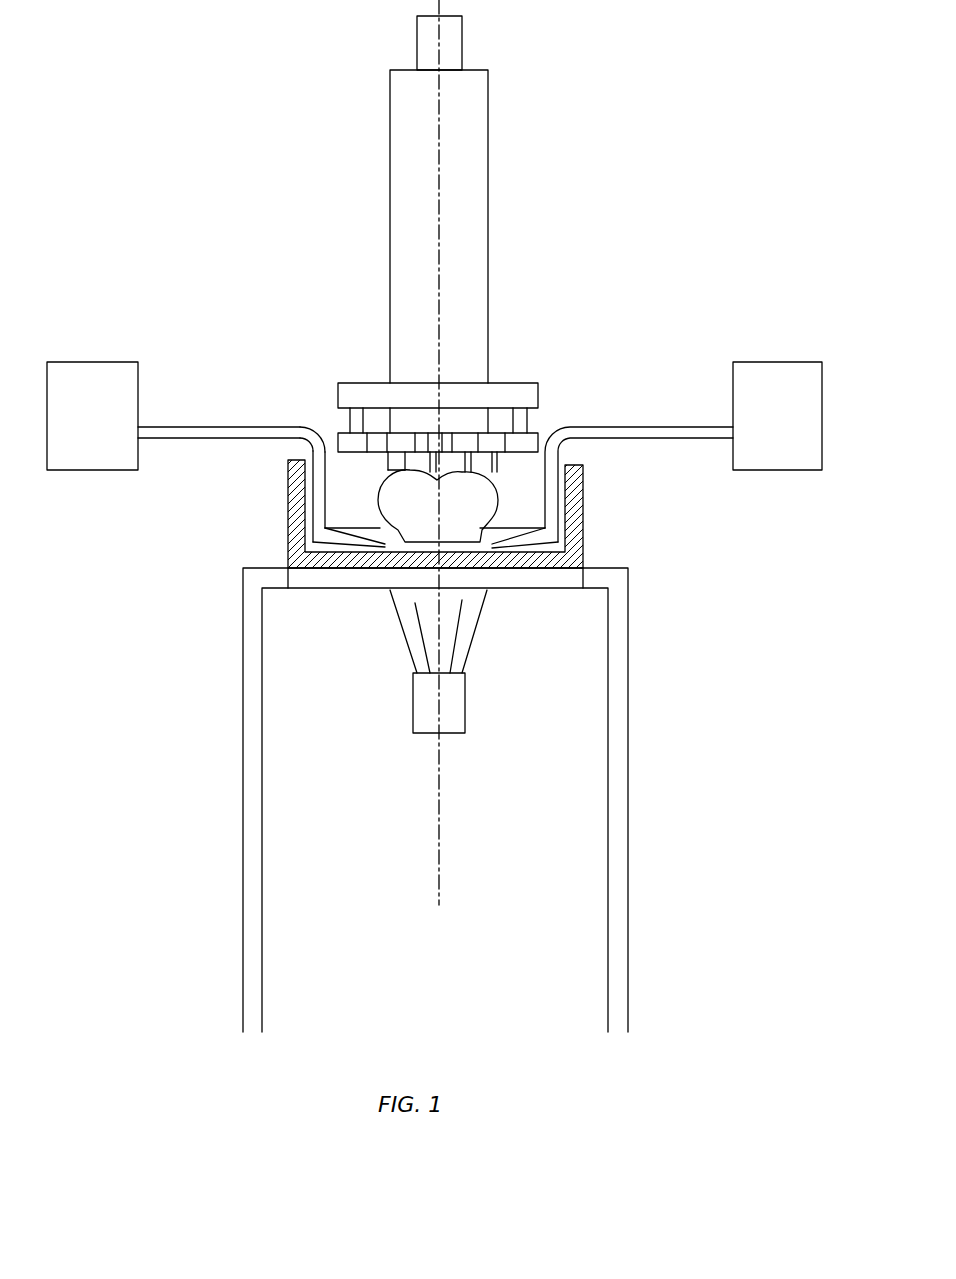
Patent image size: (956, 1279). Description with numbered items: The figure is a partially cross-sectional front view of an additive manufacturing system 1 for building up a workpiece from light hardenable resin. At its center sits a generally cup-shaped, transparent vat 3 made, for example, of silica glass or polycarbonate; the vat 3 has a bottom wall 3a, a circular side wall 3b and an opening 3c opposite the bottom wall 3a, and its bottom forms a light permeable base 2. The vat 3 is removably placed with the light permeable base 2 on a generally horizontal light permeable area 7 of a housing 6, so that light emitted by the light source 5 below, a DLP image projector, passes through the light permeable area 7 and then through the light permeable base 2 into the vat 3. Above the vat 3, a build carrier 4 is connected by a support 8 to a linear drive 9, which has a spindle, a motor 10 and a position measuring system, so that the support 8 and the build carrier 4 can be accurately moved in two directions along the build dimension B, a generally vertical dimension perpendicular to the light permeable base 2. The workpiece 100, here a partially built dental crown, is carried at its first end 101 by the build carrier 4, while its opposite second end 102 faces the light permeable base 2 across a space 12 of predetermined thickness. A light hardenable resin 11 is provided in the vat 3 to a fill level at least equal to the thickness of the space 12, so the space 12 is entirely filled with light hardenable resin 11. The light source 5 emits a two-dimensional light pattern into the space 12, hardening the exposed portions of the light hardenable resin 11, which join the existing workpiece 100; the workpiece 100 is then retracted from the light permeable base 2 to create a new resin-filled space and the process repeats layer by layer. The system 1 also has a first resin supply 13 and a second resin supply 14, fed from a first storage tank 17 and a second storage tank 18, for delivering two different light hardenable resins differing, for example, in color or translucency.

The additive manufacturing system 1 is at (670, 100).
The light permeable base 2 is at (487, 560).
The vat 3 is at (583, 530).
The bottom wall 3a is at (313, 560).
The side wall 3b is at (300, 515).
The opening 3c is at (327, 443).
The build carrier 4 is at (337, 437).
The light source 5 is at (467, 708).
The housing 6 is at (618, 662).
The light permeable area 7 is at (570, 580).
The support 8 is at (517, 393).
The linear drive 9 is at (468, 226).
The motor 10 is at (452, 26).
The light hardenable resin 11 is at (362, 528).
The space 12 is at (397, 563).
The first resin supply 13 is at (643, 427).
The second resin supply 14 is at (215, 427).
The first storage tank 17 is at (782, 372).
The second storage tank 18 is at (90, 372).
The workpiece 100 is at (480, 490).
The first end 101 is at (385, 453).
The second end 102 is at (500, 545).
The build dimension B is at (440, 93).